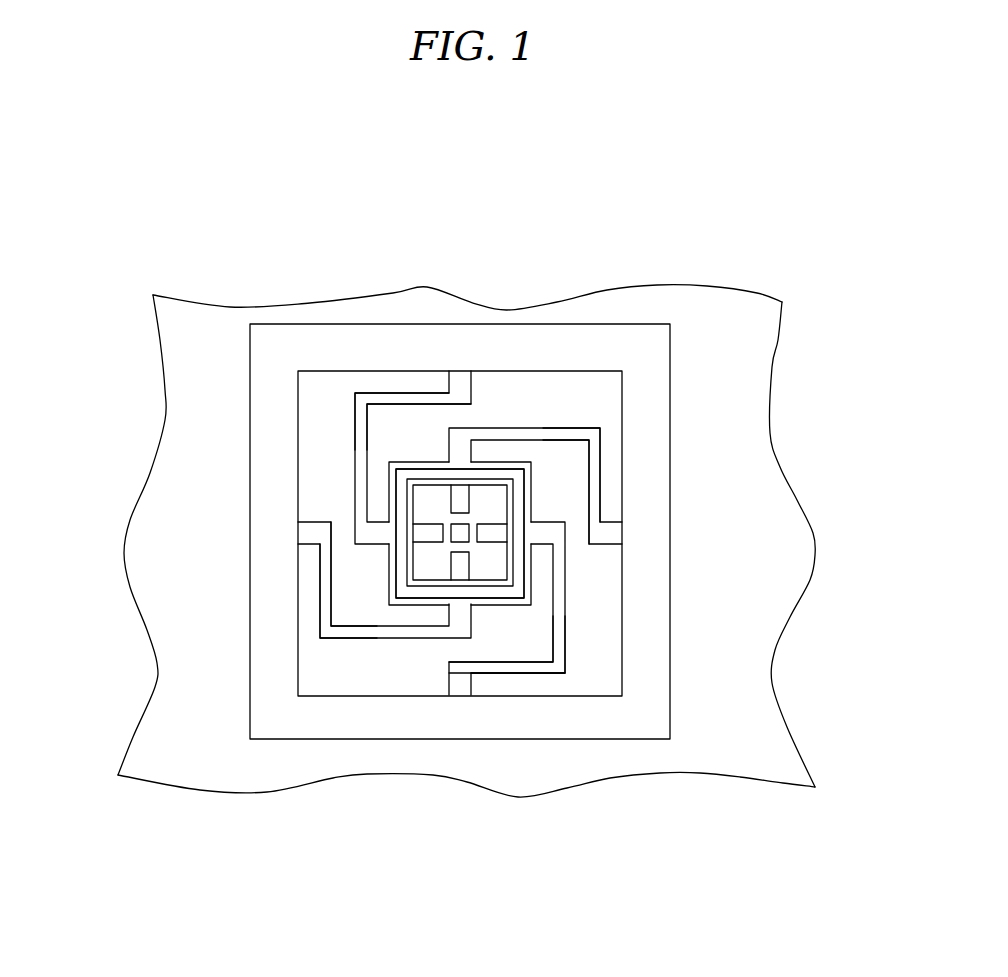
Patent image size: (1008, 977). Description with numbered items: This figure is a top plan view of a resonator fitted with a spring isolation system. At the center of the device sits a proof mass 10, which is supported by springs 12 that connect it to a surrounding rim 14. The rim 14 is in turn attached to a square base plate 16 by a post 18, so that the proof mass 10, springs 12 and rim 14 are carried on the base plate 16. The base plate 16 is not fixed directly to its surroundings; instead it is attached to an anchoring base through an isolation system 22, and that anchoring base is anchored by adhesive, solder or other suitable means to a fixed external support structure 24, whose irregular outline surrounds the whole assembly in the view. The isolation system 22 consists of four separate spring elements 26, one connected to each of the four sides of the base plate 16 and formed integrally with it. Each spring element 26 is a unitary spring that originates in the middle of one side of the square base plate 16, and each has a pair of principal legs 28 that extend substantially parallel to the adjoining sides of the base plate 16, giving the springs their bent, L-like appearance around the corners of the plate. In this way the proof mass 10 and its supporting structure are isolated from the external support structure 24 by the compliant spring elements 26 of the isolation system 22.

The proof mass 10 is at (425, 567).
The springs 12 is at (459, 492).
The rim 14 is at (518, 533).
The base plate 16 is at (531, 498).
The post 18 is at (449, 530).
The isolation system 22 is at (488, 676).
The fixed external support structure 24 is at (752, 739).
The spring elements 26 is at (538, 428).
The principal legs 28 is at (370, 430).